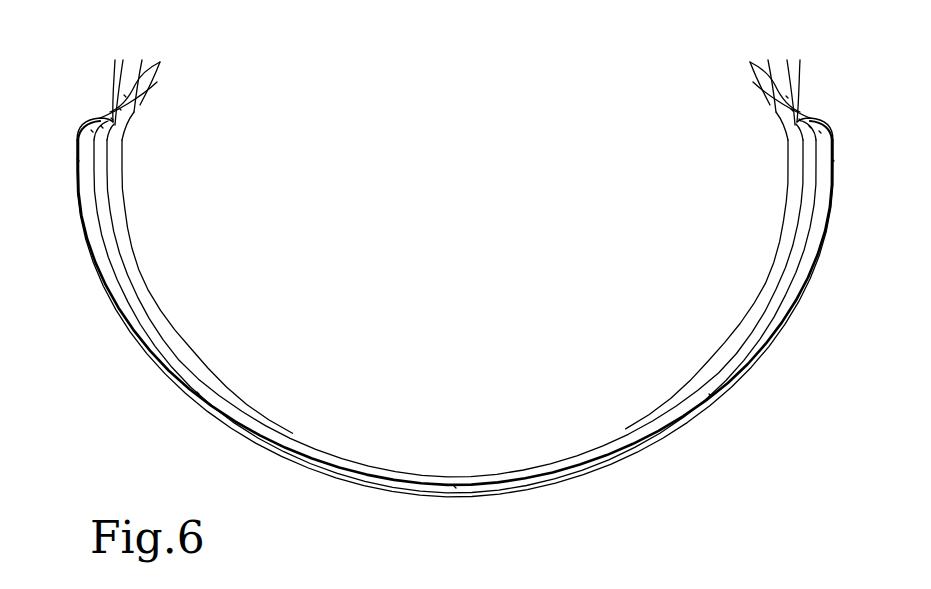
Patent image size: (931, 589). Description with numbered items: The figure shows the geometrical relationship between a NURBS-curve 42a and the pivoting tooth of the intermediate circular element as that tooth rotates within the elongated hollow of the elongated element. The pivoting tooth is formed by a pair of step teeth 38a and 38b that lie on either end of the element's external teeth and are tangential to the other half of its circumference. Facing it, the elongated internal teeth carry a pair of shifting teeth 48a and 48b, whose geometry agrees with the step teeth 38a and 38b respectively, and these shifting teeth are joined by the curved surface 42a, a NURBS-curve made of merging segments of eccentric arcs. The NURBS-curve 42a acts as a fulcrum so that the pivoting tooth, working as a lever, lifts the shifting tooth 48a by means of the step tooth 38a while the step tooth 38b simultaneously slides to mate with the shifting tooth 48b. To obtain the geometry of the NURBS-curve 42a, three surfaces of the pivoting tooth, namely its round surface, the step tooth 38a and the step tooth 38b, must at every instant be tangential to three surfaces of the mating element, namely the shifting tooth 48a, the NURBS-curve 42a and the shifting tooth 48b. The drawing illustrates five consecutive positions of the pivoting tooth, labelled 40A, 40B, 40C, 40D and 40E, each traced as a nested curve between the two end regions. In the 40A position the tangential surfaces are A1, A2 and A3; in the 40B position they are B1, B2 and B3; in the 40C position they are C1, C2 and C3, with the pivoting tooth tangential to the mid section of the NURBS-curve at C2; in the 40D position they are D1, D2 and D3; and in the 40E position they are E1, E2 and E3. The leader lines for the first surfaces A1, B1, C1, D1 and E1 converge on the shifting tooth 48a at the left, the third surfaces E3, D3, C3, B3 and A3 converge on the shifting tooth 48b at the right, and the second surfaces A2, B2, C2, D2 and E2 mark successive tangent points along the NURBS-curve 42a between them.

The step tooth 38a is at (73, 133).
The step tooth 38b is at (793, 97).
The shifting tooth 48a is at (97, 103).
The shifting tooth 48b is at (810, 110).
The pivoting tooth position 40A is at (370, 463).
The pivoting tooth position 40B is at (272, 430).
The pivoting tooth position 40C is at (140, 313).
The pivoting tooth position 40D is at (637, 430).
The pivoting tooth position 40E is at (727, 330).
The NURBS-curve 42a is at (531, 490).
The tangential surface A1 is at (125, 96).
The tangential surface B1 is at (120, 109).
The tangential surface C1 is at (112, 119).
The tangential surface D1 is at (102, 127).
The tangential surface E1 is at (92, 131).
The tangential surface E2 is at (78, 160).
The tangential surface D2 is at (198, 393).
The tangential surface C2 is at (455, 487).
The tangential surface B2 is at (710, 395).
The tangential surface A2 is at (833, 160).
The tangential surface E3 is at (787, 97).
The tangential surface D3 is at (792, 110).
The tangential surface C3 is at (800, 120).
The tangential surface B3 is at (810, 127).
The tangential surface A3 is at (820, 132).